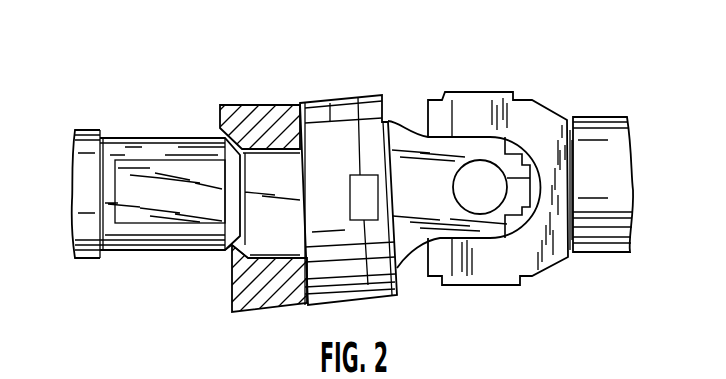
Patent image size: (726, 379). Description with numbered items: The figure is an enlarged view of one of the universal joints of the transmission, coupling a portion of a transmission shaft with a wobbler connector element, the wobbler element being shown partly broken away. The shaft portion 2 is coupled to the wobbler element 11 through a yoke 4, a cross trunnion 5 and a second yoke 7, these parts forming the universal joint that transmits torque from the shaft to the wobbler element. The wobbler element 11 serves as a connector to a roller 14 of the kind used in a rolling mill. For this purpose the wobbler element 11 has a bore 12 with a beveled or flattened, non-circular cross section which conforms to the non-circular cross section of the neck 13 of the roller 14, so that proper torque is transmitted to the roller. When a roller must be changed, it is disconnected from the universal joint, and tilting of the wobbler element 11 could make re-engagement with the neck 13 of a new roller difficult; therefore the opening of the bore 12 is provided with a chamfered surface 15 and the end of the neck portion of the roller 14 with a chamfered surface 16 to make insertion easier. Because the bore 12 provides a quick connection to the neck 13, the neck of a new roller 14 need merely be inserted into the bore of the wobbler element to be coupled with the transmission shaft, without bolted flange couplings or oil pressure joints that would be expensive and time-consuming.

The shaft portion 2 is at (593, 137).
The yoke 4 is at (535, 127).
The cross trunnion 5 is at (485, 173).
The yoke 7 is at (412, 140).
The wobbler element 11 is at (335, 122).
The bore 12 is at (275, 182).
The neck 13 is at (153, 167).
The roller 14 is at (90, 142).
The chamfered surface 15 is at (231, 253).
The chamfered surface 16 is at (231, 245).